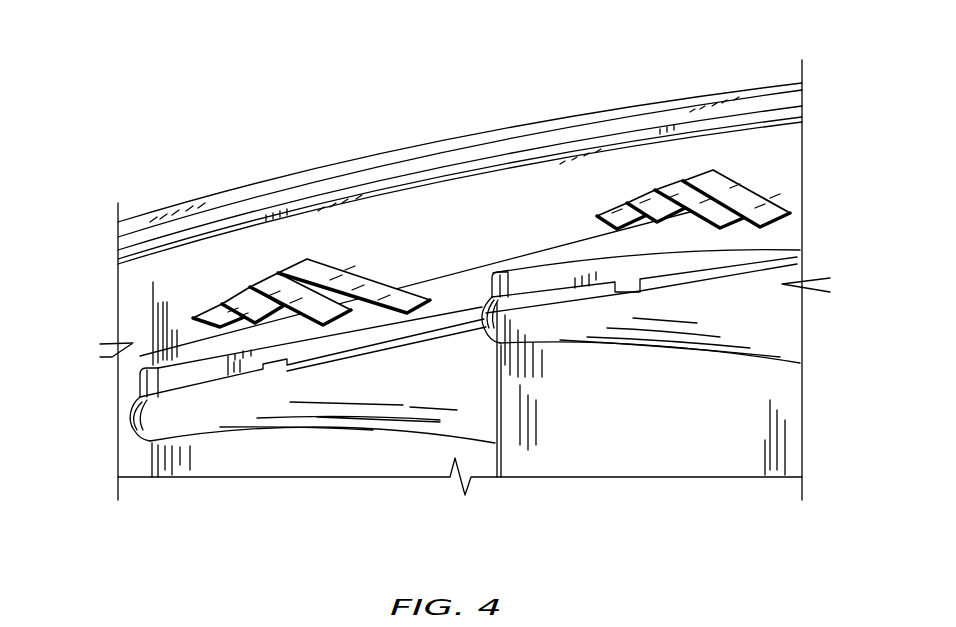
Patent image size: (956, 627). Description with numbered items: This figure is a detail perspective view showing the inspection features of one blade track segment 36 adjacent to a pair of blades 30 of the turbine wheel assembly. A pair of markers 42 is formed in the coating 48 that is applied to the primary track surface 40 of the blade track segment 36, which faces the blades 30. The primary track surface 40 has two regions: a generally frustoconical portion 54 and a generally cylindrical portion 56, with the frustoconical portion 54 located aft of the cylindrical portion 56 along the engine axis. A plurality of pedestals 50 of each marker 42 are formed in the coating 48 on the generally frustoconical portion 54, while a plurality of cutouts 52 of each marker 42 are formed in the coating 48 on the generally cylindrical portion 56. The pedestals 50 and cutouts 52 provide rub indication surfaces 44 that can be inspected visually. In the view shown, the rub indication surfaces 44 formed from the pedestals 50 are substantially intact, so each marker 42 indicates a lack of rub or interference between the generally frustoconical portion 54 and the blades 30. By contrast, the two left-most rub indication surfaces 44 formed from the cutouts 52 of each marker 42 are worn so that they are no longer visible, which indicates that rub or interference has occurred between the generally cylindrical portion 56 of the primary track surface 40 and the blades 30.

The blades 30 is at (465, 389).
The blade track segment 36 is at (460, 142).
The primary track surface 40 is at (465, 255).
The markers 42 is at (491, 255).
The rub indication surfaces 44 is at (208, 310).
The coating 48 is at (197, 345).
The pedestals 50 is at (229, 232).
The cutouts 52 is at (338, 422).
The generally frustoconical portion 54 is at (480, 200).
The generally cylindrical portion 56 is at (474, 304).